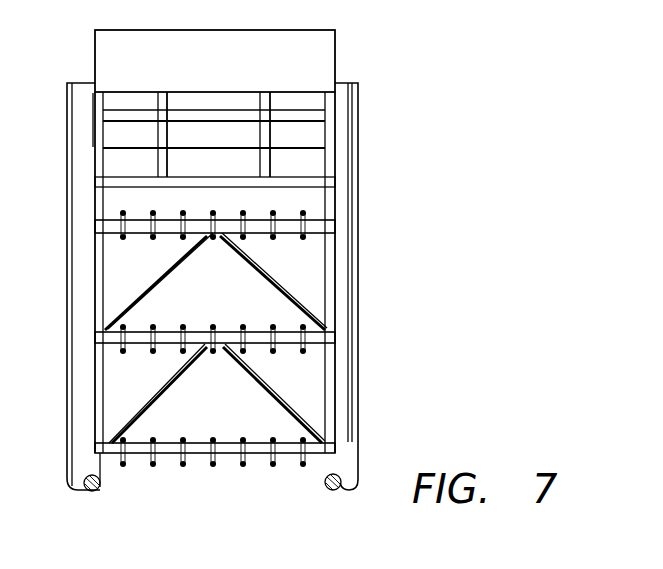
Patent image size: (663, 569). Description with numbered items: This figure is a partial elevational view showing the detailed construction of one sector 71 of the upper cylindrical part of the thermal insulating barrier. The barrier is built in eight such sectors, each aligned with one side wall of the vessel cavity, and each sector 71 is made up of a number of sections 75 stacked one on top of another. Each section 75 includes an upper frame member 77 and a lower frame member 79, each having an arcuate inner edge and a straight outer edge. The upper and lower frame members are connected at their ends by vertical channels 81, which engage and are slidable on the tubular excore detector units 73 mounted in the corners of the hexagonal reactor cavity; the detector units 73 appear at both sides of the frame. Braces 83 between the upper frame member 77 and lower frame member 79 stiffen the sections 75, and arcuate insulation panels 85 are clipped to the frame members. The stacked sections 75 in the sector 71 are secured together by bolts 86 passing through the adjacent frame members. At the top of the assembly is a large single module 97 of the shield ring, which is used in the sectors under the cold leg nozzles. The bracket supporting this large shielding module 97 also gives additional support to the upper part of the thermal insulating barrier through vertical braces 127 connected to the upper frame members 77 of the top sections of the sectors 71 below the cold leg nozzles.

The sector 71 is at (269, 305).
The tubular excore detector unit 73 is at (360, 143).
The section 75 is at (341, 216).
The upper frame member 77 is at (138, 353).
The lower frame member 79 is at (213, 356).
The vertical channel 81 is at (103, 285).
The brace 83 is at (259, 393).
The arcuate insulation panel 85 is at (312, 392).
The bolt 86 is at (213, 325).
The large single module 97 is at (335, 58).
The vertical brace 127 is at (272, 135).